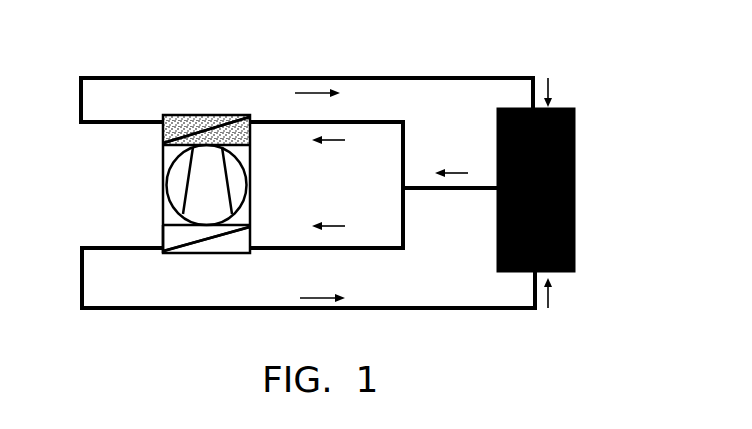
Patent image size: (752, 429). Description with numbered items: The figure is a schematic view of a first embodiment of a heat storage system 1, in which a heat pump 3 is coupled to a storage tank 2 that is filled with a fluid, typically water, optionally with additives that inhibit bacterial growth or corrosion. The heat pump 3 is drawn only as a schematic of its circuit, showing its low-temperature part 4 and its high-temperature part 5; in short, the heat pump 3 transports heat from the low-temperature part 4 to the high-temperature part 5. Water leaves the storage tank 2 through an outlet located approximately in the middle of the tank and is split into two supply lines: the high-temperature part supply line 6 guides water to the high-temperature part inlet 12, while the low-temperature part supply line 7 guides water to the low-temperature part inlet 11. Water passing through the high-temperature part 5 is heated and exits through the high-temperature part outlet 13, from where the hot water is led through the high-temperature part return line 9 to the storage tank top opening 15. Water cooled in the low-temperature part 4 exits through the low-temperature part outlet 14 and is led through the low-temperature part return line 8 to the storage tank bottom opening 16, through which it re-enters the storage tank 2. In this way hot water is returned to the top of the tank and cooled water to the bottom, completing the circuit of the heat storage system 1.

The heat storage system 1 is at (610, 106).
The storage tank 2 is at (600, 202).
The heat pump 3 is at (150, 180).
The low-temperature part 4 is at (208, 250).
The high-temperature part 5 is at (181, 78).
The high-temperature part supply line 6 is at (384, 122).
The low-temperature part supply line 7 is at (381, 252).
The low-temperature part return line 8 is at (388, 308).
The high-temperature part return line 9 is at (418, 78).
The low-temperature part inlet 11 is at (254, 240).
The high-temperature part inlet 12 is at (250, 130).
The high-temperature part outlet 13 is at (163, 128).
The low-temperature part outlet 14 is at (163, 246).
The storage tank top opening 15 is at (533, 108).
The storage tank bottom opening 16 is at (535, 275).